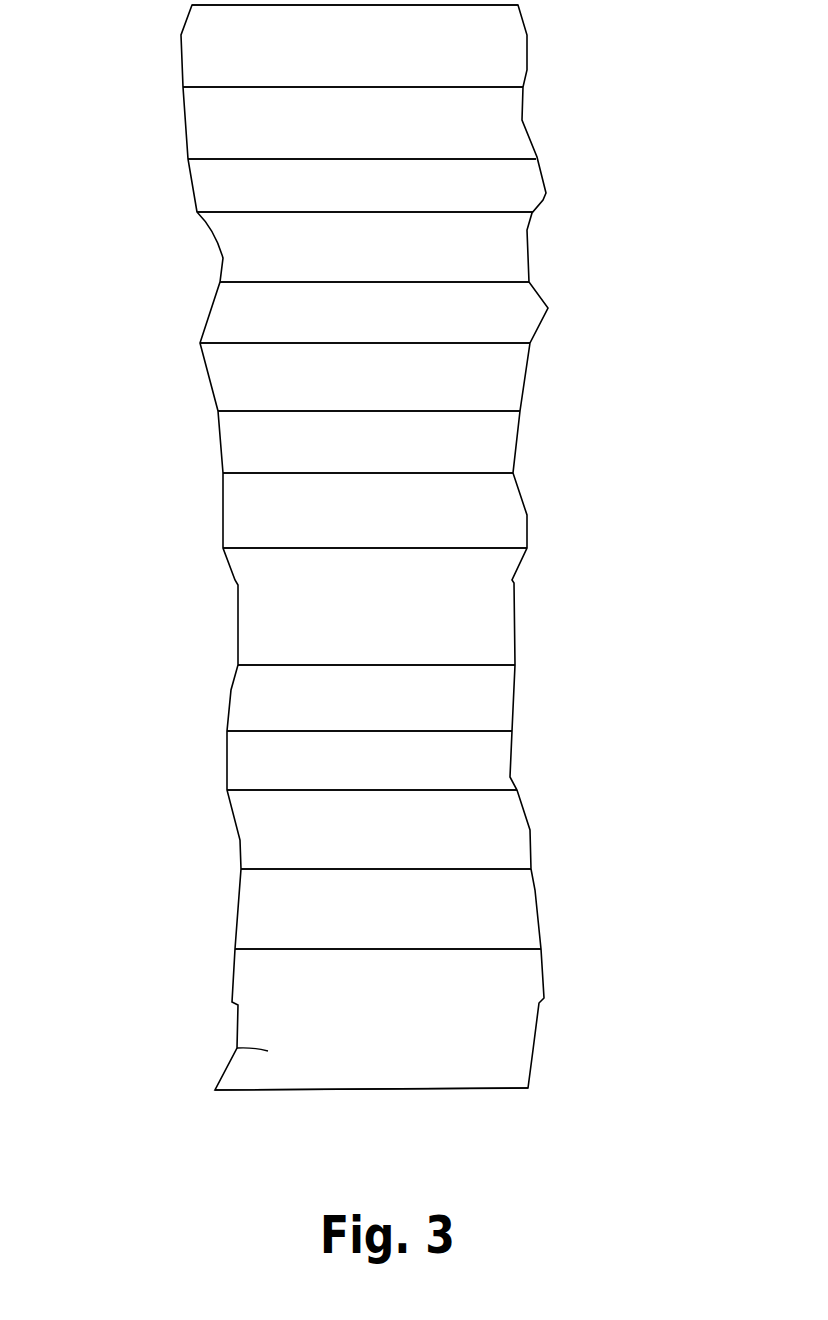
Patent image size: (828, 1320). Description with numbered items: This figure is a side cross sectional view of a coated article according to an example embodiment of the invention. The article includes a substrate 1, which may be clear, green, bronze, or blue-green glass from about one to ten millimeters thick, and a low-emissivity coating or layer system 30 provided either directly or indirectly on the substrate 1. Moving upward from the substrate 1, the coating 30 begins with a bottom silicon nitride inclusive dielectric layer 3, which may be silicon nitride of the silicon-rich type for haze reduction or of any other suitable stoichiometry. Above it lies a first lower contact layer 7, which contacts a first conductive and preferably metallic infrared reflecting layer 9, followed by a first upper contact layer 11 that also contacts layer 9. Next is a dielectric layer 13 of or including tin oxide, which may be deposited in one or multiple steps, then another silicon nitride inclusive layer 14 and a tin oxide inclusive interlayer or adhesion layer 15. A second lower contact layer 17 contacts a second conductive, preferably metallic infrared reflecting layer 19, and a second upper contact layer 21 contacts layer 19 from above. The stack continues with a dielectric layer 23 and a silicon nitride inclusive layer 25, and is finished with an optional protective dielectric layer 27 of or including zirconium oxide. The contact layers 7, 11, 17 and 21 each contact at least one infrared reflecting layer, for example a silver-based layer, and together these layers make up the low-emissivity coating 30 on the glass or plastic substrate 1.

The substrate 1 is at (516, 1025).
The bottom silicon nitride inclusive dielectric layer 3 is at (510, 922).
The first lower contact layer 7 is at (510, 825).
The first infrared reflecting layer 9 is at (493, 757).
The first upper contact layer 11 is at (498, 693).
The dielectric layer 13 is at (495, 621).
The silicon nitride inclusive layer 14 is at (497, 517).
The tin oxide inclusive interlayer 15 is at (495, 444).
The second lower contact layer 17 is at (497, 388).
The second infrared reflecting layer 19 is at (505, 316).
The second upper contact layer 21 is at (510, 253).
The dielectric layer 23 is at (522, 191).
The silicon nitride inclusive layer 25 is at (505, 133).
The protective dielectric layer 27 is at (500, 52).
The coating 30 is at (158, 8).